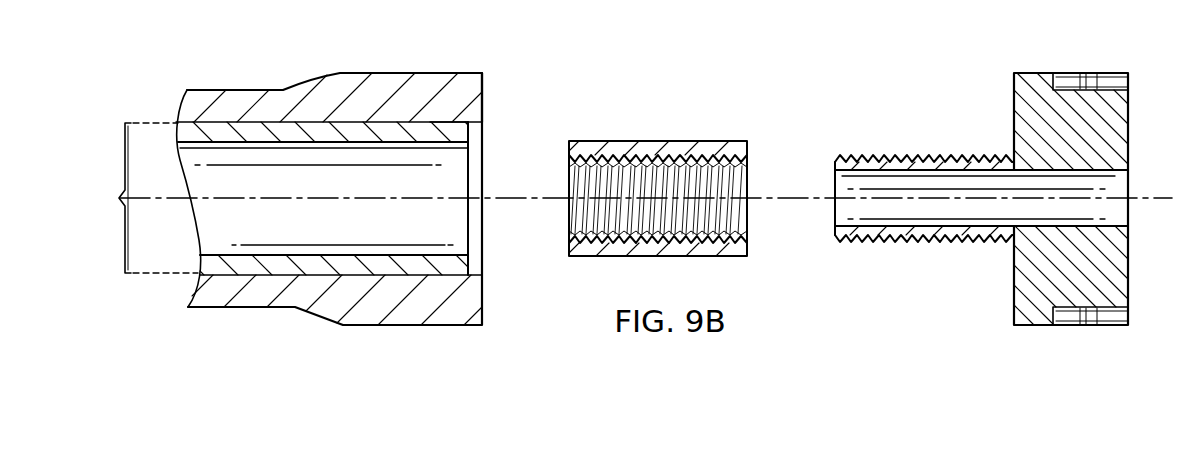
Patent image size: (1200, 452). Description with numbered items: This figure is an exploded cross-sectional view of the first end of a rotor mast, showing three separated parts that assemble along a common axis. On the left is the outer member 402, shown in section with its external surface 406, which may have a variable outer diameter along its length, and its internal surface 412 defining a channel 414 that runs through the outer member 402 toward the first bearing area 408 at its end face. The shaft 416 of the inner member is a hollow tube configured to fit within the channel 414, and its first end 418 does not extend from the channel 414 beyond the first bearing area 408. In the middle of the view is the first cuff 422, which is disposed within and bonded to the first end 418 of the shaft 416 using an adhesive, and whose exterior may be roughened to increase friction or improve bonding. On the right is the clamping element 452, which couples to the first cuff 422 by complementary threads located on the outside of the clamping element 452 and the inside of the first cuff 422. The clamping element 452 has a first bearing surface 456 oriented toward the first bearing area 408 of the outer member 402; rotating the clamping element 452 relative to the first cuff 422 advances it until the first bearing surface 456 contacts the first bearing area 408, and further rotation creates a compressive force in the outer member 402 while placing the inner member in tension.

The outer member 402 is at (241, 85).
The external surface 406 is at (352, 73).
The first bearing area 408 is at (485, 83).
The internal surface 412 is at (274, 121).
The channel 414 is at (135, 198).
The shaft 416 is at (226, 256).
The first end 418 is at (444, 130).
The first cuff 422 is at (656, 140).
The clamping element 452 is at (1132, 130).
The first bearing surface 456 is at (1013, 285).